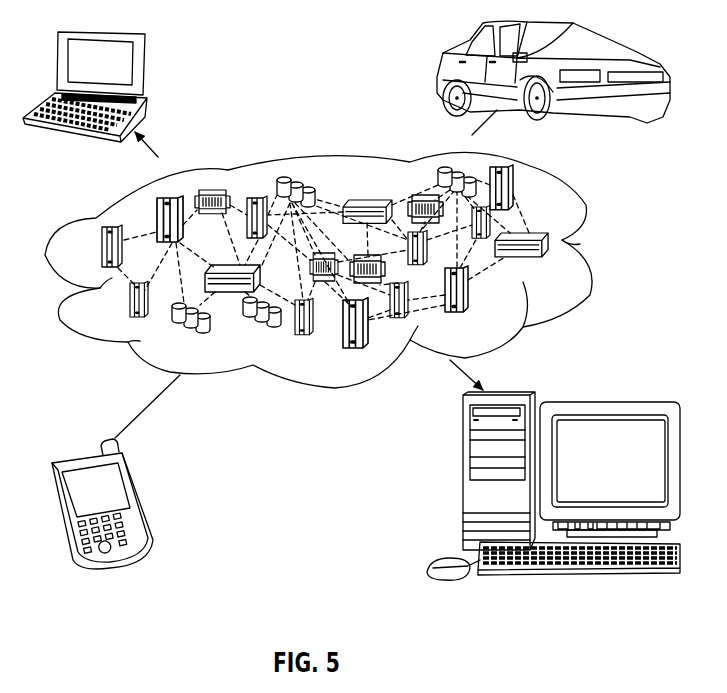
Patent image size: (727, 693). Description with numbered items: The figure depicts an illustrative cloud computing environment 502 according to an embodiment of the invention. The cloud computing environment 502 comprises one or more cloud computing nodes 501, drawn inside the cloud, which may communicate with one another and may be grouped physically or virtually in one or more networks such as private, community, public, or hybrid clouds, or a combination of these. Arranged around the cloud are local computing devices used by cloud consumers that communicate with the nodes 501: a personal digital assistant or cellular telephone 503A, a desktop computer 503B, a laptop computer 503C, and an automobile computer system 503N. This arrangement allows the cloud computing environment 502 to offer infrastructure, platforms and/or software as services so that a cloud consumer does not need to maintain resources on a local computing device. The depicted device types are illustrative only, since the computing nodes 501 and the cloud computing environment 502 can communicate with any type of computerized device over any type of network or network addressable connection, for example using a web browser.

The cloud computing nodes 501 is at (572, 261).
The cloud computing environment 502 is at (583, 214).
The personal digital assistant (PDA) or cellular telephone 503A is at (138, 497).
The desktop computer 503B is at (462, 478).
The laptop computer 503C is at (146, 64).
The automobile computer system 503N is at (440, 66).